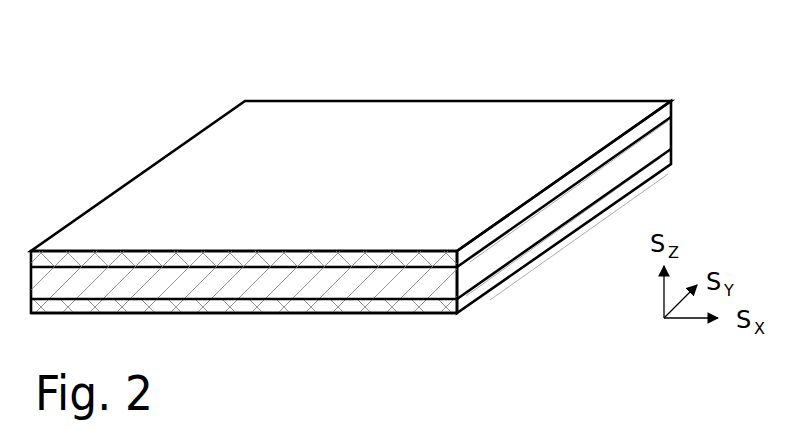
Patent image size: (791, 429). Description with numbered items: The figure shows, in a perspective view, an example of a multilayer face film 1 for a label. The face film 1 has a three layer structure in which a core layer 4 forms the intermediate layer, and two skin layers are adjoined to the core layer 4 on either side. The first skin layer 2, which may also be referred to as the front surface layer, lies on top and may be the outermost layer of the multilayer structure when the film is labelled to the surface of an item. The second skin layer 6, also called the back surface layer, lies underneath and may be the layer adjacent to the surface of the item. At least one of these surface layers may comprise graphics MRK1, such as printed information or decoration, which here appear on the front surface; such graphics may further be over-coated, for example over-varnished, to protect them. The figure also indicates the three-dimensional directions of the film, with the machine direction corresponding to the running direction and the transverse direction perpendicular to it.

The face film 1 is at (388, 73).
The first skin layer 2 is at (671, 100).
The core layer 4 is at (671, 133).
The second skin layer 6 is at (671, 163).
The graphics MRK1 is at (218, 175).